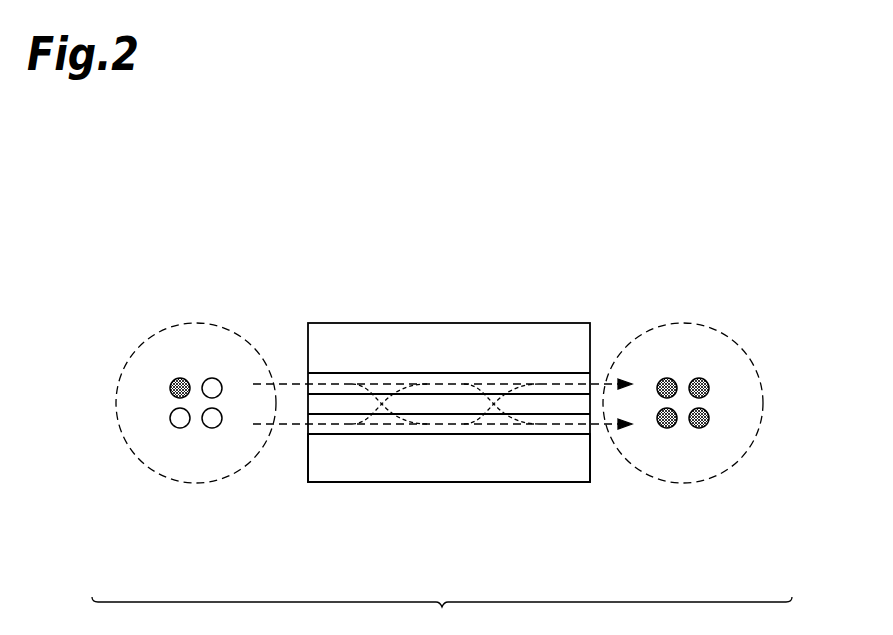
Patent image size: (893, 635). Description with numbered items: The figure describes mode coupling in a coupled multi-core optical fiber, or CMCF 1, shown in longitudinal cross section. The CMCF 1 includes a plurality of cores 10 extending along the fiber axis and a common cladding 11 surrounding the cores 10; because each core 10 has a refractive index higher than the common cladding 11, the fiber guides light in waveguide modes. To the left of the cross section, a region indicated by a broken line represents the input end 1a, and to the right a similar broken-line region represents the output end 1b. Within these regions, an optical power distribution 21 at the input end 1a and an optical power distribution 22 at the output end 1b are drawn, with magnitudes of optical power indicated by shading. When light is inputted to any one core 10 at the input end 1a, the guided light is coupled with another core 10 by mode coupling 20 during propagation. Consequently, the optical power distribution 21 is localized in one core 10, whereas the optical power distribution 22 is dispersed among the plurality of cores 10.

The coupled multi-core optical fiber (CMCF) 1 is at (451, 333).
The input end 1a is at (150, 337).
The output end 1b is at (590, 342).
The core 10 is at (358, 434).
The common cladding 11 is at (453, 475).
The mode coupling 20 is at (503, 413).
The optical power distribution at the input end 21 is at (197, 430).
The optical power distribution at the output end 22 is at (684, 430).